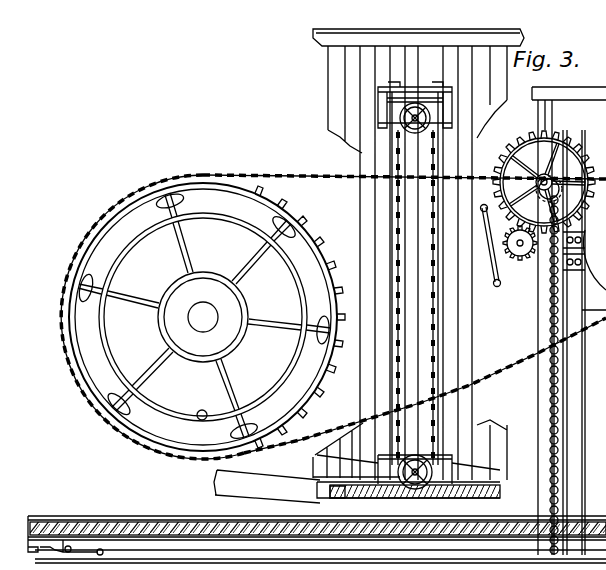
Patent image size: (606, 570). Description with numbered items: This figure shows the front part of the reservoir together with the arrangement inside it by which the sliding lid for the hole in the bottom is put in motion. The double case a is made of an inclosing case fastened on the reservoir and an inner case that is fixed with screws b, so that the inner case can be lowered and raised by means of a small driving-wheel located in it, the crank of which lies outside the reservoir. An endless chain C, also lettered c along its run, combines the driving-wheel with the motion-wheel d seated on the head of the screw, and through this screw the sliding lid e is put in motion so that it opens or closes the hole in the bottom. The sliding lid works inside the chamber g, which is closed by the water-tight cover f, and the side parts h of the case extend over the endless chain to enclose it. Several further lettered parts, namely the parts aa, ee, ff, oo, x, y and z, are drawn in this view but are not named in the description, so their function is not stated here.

The double case a is at (478, 292).
The chain aa is at (333, 310).
The screws b is at (415, 98).
The endless chain c is at (454, 297).
The endless chain C is at (544, 182).
The motion-wheel d is at (477, 372).
The sliding lid e is at (408, 497).
The pin ee is at (193, 404).
The water-tight cover f is at (461, 321).
The sprocket wheel ff is at (207, 317).
The chamber of the sliding lid g is at (446, 337).
The side parts of the case h is at (418, 254).
The rings oo is at (507, 182).
The rail x is at (317, 505).
The rail end y is at (65, 527).
The rail bottom z is at (320, 551).